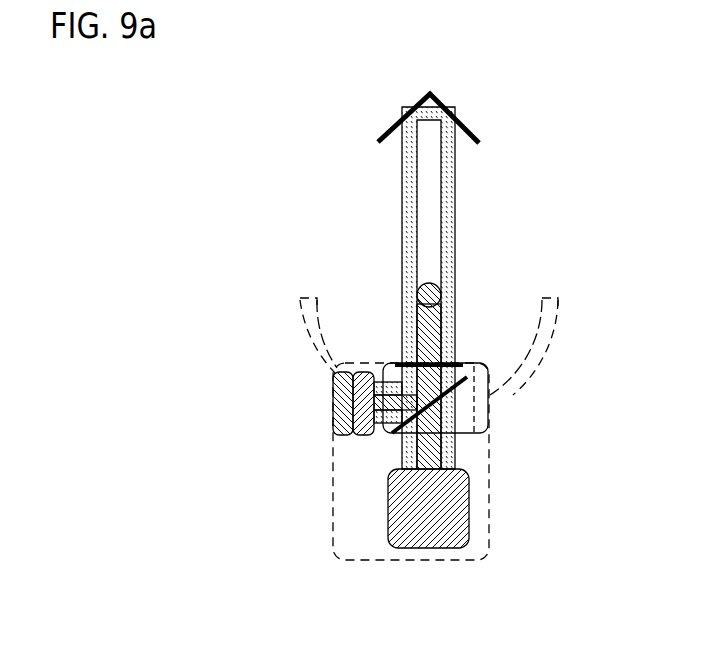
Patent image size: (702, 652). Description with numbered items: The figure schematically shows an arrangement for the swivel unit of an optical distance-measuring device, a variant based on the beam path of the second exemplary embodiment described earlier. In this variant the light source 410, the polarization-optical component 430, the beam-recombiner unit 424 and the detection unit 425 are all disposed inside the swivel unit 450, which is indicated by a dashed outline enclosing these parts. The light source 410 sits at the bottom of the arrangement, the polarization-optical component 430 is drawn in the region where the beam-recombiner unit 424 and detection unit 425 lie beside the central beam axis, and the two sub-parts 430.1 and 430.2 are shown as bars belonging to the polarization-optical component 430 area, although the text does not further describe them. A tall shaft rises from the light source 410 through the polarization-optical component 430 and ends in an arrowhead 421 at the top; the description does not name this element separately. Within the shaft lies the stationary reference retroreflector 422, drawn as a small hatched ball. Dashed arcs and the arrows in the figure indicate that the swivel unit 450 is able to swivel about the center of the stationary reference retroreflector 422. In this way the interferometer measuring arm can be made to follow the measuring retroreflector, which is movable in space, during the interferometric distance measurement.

The light source 410 is at (425, 530).
The arrow tip / shaft 421 is at (433, 96).
The stationary reference retroreflector 422 is at (440, 281).
The beam-recombiner unit 424 is at (356, 429).
The detection unit 425 is at (337, 405).
The polarization-optical component 430 is at (486, 366).
The diagonal bar 430.1 is at (462, 383).
The transverse bar 430.2 is at (402, 362).
The swivel unit 450 is at (490, 550).